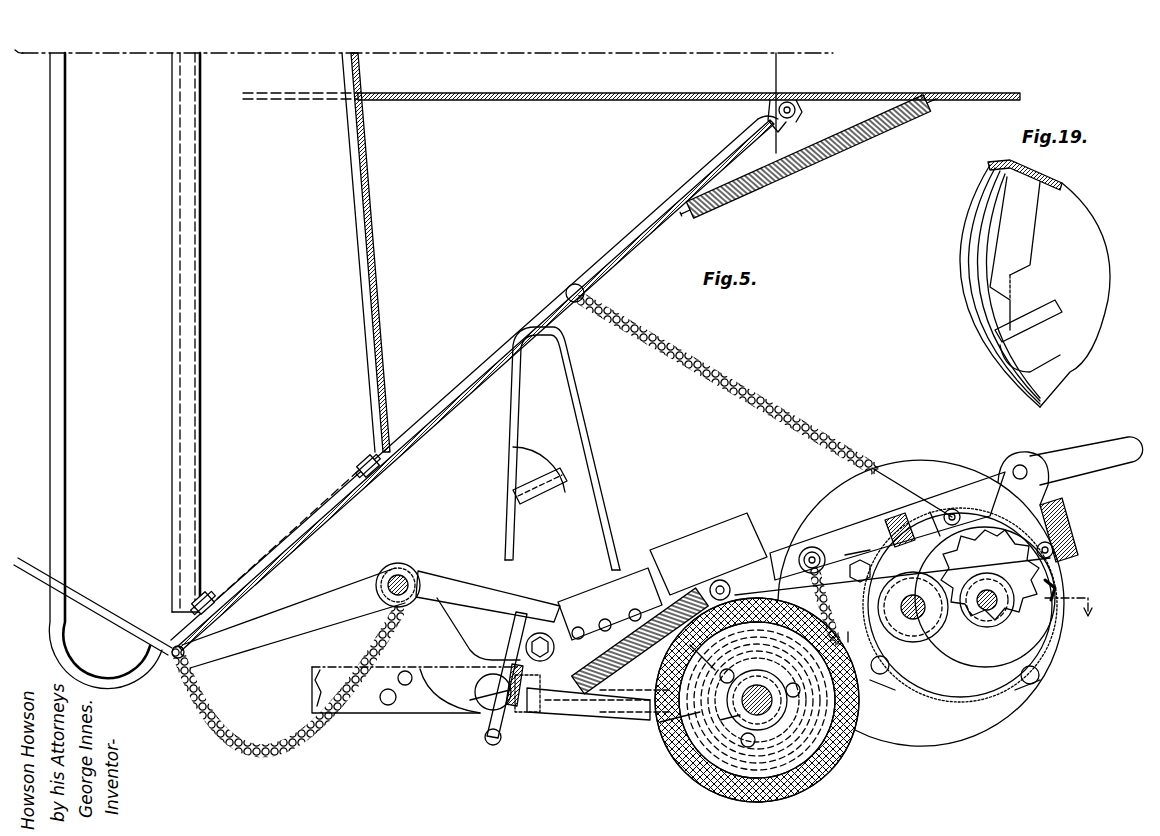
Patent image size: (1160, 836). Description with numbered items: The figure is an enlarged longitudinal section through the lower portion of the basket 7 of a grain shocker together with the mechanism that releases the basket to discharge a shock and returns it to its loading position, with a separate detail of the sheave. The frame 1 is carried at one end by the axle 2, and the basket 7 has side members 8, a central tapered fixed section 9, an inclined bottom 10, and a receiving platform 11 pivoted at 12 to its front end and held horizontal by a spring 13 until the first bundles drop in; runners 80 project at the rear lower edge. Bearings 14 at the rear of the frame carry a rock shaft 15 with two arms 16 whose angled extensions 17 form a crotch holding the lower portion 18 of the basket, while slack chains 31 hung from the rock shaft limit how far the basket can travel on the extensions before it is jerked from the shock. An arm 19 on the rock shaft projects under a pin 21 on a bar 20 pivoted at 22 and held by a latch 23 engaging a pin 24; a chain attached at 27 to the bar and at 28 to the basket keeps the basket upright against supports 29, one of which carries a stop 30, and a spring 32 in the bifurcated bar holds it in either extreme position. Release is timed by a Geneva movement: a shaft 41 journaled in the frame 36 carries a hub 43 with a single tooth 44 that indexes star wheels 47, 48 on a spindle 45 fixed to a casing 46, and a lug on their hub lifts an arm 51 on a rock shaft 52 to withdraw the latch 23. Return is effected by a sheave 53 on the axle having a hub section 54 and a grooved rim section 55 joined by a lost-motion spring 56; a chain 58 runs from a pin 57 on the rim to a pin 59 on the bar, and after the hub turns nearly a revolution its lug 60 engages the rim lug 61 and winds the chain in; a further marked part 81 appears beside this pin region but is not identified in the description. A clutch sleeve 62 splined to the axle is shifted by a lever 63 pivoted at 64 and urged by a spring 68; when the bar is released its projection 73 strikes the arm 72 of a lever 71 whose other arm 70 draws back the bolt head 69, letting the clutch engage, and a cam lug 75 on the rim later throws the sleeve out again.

In FIG. 5, the frame 1 is at (355, 722).
In FIG. 5, the axle 2 is at (775, 702).
In FIG. 5, the basket 7 is at (170, 148).
In FIG. 5, the side members 8 is at (778, 66).
In FIG. 5, the fixed section 9 is at (180, 196).
In FIG. 5, the inclined bottom 10 is at (632, 258).
In FIG. 5, the receiving platform 11 is at (600, 98).
In FIG. 5, the pivot 12 is at (800, 112).
In FIG. 5, the spring 13 is at (812, 172).
In FIG. 5, the bearings 14 is at (448, 634).
In FIG. 5, the rock shaft 15 is at (410, 572).
In FIG. 5, the arms 16 is at (265, 650).
In FIG. 5, the extensions 17 is at (88, 600).
In FIG. 5, the lower portion 18 is at (172, 660).
In FIG. 5, the arm 19 is at (475, 585).
In FIG. 5, the bar 20 is at (887, 526).
In FIG. 5, the pin 21 is at (720, 580).
In FIG. 5, the pivot 22 is at (541, 632).
In FIG. 5, the latch 23 is at (1050, 445).
In FIG. 5, the pin 24 is at (1013, 468).
In FIG. 5, the chain attachment point 27 is at (950, 510).
In FIG. 5, the chain attachment point 28 is at (600, 292).
In FIG. 5, the supports 29 is at (528, 342).
In FIG. 5, the stop 30 is at (548, 498).
In FIG. 5, the chains 31 is at (250, 755).
In FIG. 5, the spring 32 is at (640, 700).
In FIG. 5, the frame 36 is at (845, 487).
In FIG. 5, the shaft 41 is at (890, 560).
In FIG. 5, the hub 43 is at (913, 612).
In FIG. 5, the tooth 44 is at (912, 588).
In FIG. 5, the spindle 45 is at (1005, 596).
In FIG. 5, the casing 46 is at (950, 655).
In FIG. 5, the star wheel 47 is at (985, 655).
In FIG. 5, the star wheel 48 is at (1055, 590).
In FIG. 5, the arm 51 is at (922, 524).
In FIG. 5, the rock shaft 52 is at (1060, 562).
In FIG. 5, the sheave 53 is at (705, 740).
In FIG. 5, the hub section 54 is at (825, 772).
In FIG. 19, the hub section 54 is at (1090, 222).
In FIG. 5, the grooved rim section 55 is at (862, 697).
In FIG. 19, the grooved rim section 55 is at (997, 230).
In FIG. 5, the spring 56 is at (800, 718).
In FIG. 5, the pin 57 is at (768, 612).
In FIG. 5, the chain 58 is at (838, 612).
In FIG. 5, the pin 59 is at (804, 564).
In FIG. 5, the lug 60 is at (690, 728).
In FIG. 19, the lug 60 is at (1010, 360).
In FIG. 5, the lug 61 is at (660, 716).
In FIG. 19, the lug 61 is at (1005, 312).
In FIG. 5, the clutch sleeve 62 is at (722, 758).
In FIG. 5, the lever 63 is at (592, 715).
In FIG. 5, the pivot 64 is at (545, 718).
In FIG. 5, the spring 68 is at (640, 660).
In FIG. 5, the head 69 is at (488, 700).
In FIG. 5, the arm 70 is at (498, 680).
In FIG. 5, the lever 71 is at (493, 746).
In FIG. 5, the arm 72 is at (515, 620).
In FIG. 5, the projection 73 is at (630, 560).
In FIG. 5, the cam lug 75 is at (728, 660).
In FIG. 5, the runners 80 is at (67, 405).
In FIG. 5, the pin 81 is at (851, 629).